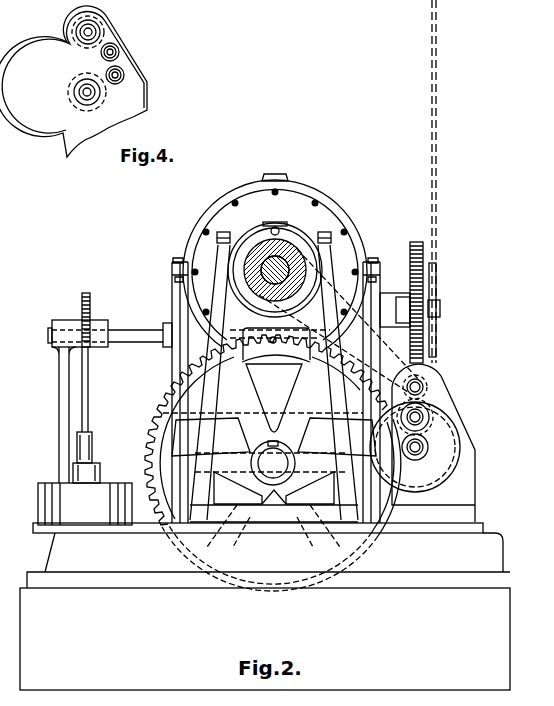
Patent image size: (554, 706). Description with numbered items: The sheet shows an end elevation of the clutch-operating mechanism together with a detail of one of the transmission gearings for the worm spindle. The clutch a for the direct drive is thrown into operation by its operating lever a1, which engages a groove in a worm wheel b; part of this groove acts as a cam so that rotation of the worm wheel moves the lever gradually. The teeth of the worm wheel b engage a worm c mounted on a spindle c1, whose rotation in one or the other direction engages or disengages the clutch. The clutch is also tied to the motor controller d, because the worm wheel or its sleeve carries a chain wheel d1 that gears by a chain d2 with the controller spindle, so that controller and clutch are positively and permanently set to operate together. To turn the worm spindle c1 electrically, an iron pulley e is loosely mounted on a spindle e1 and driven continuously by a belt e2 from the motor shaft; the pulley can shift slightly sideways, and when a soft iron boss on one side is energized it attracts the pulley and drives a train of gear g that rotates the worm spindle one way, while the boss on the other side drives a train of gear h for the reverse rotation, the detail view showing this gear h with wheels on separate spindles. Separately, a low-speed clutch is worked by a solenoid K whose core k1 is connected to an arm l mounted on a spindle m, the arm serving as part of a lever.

In FIG. 2, the clutch a is at (340, 213).
In FIG. 2, the operating lever a1 is at (404, 294).
In FIG. 2, the worm wheel b is at (418, 244).
In FIG. 2, the worm c is at (422, 380).
In FIG. 4, the worm spindle c1 is at (86, 31).
In FIG. 2, the worm spindle c1 is at (424, 389).
In FIG. 2, the motor controller d is at (327, 181).
In FIG. 2, the chain wheel d1 is at (436, 284).
In FIG. 2, the chain d2 is at (437, 85).
In FIG. 2, the iron pulley e is at (463, 455).
In FIG. 4, the spindle e1 is at (88, 94).
In FIG. 2, the spindle e1 is at (423, 443).
In FIG. 2, the belt e2 is at (427, 356).
In FIG. 2, the train of gear g is at (429, 418).
In FIG. 4, the train of gear h is at (103, 98).
In FIG. 2, the solenoid K is at (92, 512).
In FIG. 2, the core k1 is at (93, 450).
In FIG. 2, the arm l is at (98, 322).
In FIG. 2, the spindle m is at (133, 337).